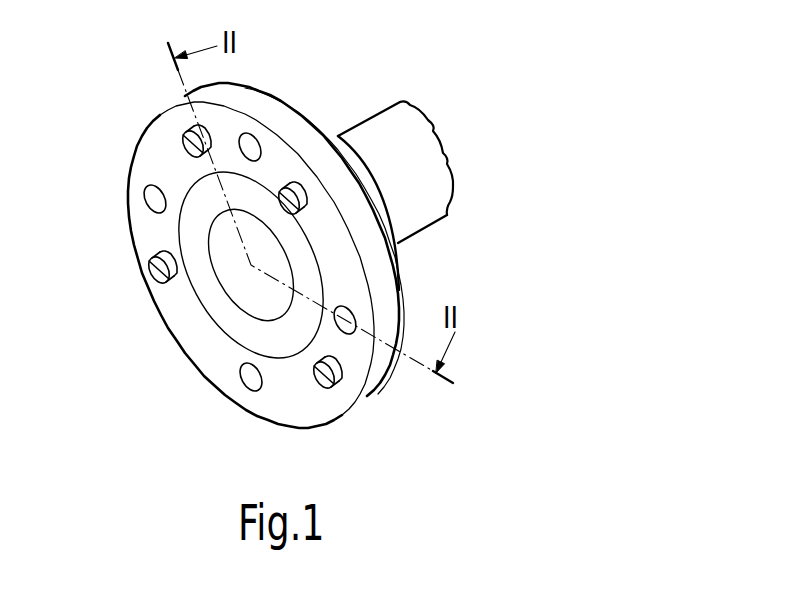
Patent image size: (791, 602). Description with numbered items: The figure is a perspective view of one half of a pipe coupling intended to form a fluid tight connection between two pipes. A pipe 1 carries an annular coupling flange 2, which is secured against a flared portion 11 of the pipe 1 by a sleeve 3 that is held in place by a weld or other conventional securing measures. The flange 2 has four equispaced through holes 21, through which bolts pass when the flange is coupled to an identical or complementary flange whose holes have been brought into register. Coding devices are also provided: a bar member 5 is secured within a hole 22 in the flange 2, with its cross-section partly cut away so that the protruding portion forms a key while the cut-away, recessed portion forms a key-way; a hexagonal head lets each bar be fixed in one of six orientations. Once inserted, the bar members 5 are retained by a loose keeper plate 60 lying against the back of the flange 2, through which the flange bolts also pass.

The pipe 1 is at (397, 123).
The annular coupling flange 2 is at (208, 357).
The sleeve 3 is at (392, 224).
The bar member 5 is at (147, 266).
The flared portion 11 is at (210, 288).
The through holes 21 is at (247, 383).
The hole 22 is at (347, 365).
The keeper plate 60 is at (299, 106).